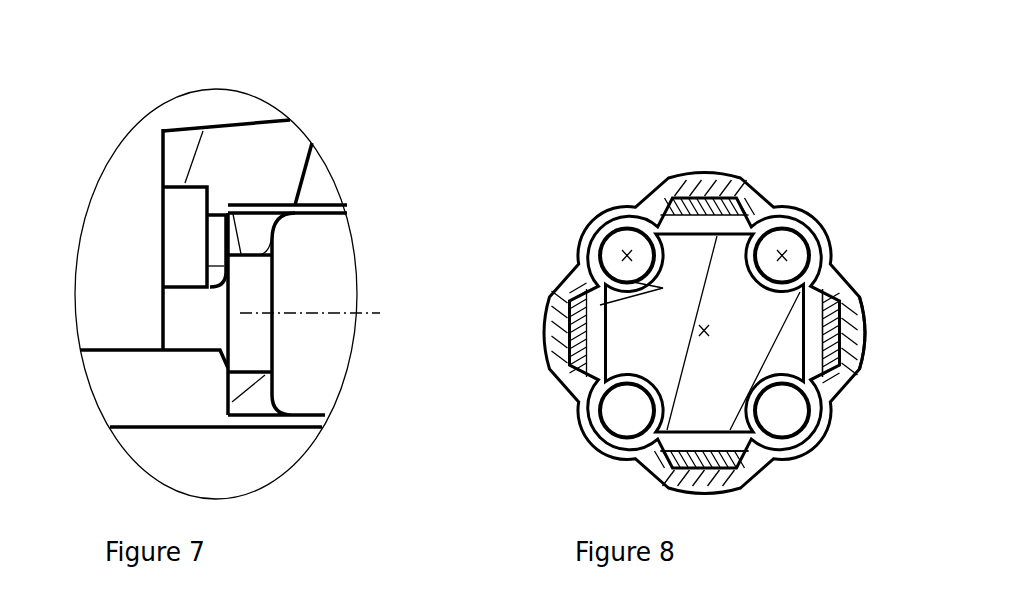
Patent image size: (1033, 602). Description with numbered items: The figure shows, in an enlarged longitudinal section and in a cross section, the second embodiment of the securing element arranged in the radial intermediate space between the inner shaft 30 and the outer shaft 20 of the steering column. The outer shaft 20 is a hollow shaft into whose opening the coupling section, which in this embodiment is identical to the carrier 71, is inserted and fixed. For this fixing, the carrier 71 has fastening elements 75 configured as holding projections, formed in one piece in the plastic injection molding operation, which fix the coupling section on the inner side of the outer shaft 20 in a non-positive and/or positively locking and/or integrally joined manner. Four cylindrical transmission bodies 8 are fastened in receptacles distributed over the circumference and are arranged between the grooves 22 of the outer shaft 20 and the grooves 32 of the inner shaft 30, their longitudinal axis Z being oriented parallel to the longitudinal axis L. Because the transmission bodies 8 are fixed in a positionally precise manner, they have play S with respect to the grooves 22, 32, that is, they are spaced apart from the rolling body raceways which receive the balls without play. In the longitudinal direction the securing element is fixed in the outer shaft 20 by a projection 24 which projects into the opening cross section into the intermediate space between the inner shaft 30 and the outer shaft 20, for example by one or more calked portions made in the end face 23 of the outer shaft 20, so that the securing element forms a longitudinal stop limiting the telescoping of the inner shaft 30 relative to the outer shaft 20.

In FIG. 7, the transmission body 8 is at (328, 378).
In FIG. 8, the transmission body 8 is at (624, 226).
In FIG. 7, the outer shaft 20 is at (230, 155).
In FIG. 8, the outer shaft 20 is at (560, 300).
In FIG. 7, the groove 22 is at (277, 200).
In FIG. 8, the groove 22 is at (577, 252).
In FIG. 7, the end face 23 is at (160, 155).
In FIG. 7, the projection 24 is at (212, 245).
In FIG. 8, the inner shaft 30 is at (643, 336).
In FIG. 8, the groove 32 is at (600, 305).
In FIG. 8, the carrier 71 is at (848, 337).
In FIG. 8, the fastening element 75 is at (838, 388).
In FIG. 7, the play S is at (327, 203).
In FIG. 8, the play S is at (664, 290).
In FIG. 7, the longitudinal axis of transmission body Z is at (376, 308).
In FIG. 8, the longitudinal axis of transmission body Z is at (623, 248).
In FIG. 8, the longitudinal axis L is at (704, 325).